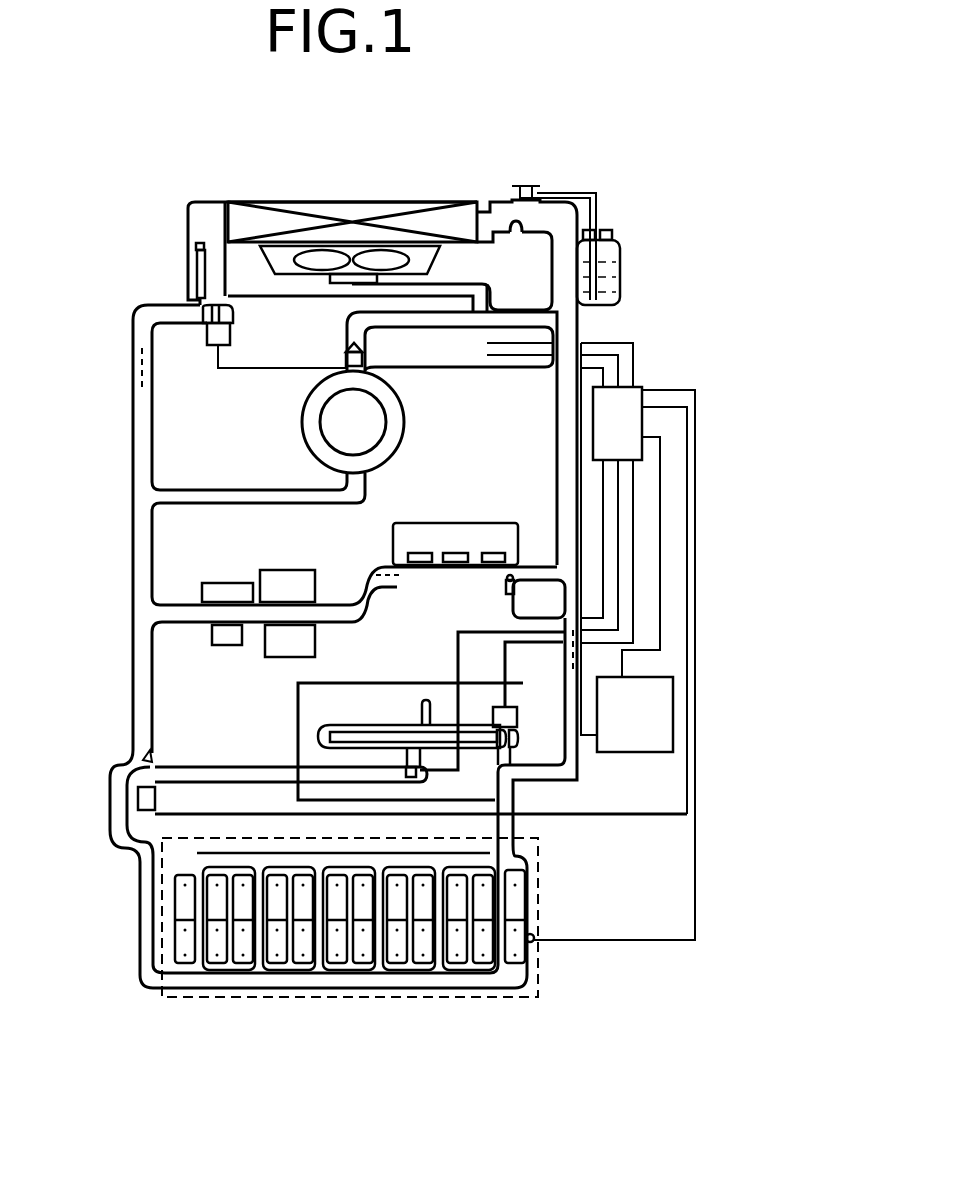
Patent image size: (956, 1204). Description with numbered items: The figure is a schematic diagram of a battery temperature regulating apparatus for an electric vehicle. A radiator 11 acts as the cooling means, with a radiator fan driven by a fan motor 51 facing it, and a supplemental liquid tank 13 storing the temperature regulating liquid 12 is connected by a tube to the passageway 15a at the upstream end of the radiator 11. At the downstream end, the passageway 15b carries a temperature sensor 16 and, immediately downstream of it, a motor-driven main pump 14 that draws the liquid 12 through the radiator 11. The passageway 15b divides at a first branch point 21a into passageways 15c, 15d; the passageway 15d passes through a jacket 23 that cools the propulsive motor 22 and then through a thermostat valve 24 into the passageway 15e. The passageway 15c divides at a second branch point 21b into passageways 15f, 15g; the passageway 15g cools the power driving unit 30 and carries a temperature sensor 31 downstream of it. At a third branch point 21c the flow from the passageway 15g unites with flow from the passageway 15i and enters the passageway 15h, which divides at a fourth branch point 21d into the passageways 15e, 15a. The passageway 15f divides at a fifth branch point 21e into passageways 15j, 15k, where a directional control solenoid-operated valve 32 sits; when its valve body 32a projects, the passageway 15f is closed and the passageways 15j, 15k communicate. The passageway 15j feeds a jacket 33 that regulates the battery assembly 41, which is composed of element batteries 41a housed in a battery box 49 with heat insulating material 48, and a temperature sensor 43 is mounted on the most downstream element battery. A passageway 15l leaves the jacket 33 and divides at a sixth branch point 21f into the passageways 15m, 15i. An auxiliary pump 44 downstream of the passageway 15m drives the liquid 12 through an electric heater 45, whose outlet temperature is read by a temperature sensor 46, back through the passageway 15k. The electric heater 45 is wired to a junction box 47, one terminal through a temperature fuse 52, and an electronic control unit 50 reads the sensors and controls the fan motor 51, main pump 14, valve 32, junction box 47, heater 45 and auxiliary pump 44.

The radiator 11 is at (322, 200).
The temperature regulating liquid 12 is at (606, 268).
The supplemental liquid tank 13 is at (620, 285).
The main pump 14 is at (232, 332).
The passageway 15a is at (516, 235).
The passageway 15b is at (135, 415).
The passageway 15c is at (148, 540).
The passageway 15d is at (240, 500).
The passageway 15e is at (425, 328).
The passageway 15f is at (145, 655).
The passageway 15g is at (186, 622).
The passageway 15h is at (556, 455).
The passageway 15i is at (572, 602).
The passageway 15j is at (108, 845).
The passageway 15k is at (208, 782).
The passageway 15l is at (515, 828).
The passageway 15m is at (540, 700).
The temperature sensor 16 is at (193, 252).
The first branch point 21a is at (150, 502).
The second branch point 21b is at (150, 607).
The third branch point 21c is at (557, 540).
The fourth branch point 21d is at (567, 322).
The fifth branch point 21e is at (165, 770).
The sixth branch point 21f is at (520, 790).
The propulsive motor 22 is at (386, 412).
The jacket 23 is at (400, 432).
The thermostat valve 24 is at (346, 357).
The power driving unit 30 is at (420, 523).
The temperature sensor 31 is at (506, 585).
The directional control solenoid-operated valve 32 is at (138, 796).
The valve body 32a is at (150, 755).
The jacket 33 is at (200, 962).
The battery assembly 41 is at (533, 885).
The element batteries 41a is at (515, 950).
The temperature sensor 43 is at (538, 938).
The auxiliary pump 44 is at (502, 706).
The electric heater 45 is at (348, 733).
The temperature sensor 46 is at (406, 770).
The junction box 47 is at (673, 722).
The heat insulating material 48 is at (498, 1000).
The battery box 49 is at (540, 992).
The electronic control unit 50 is at (640, 385).
The fan motor 51 is at (335, 280).
The temperature fuse 52 is at (418, 722).